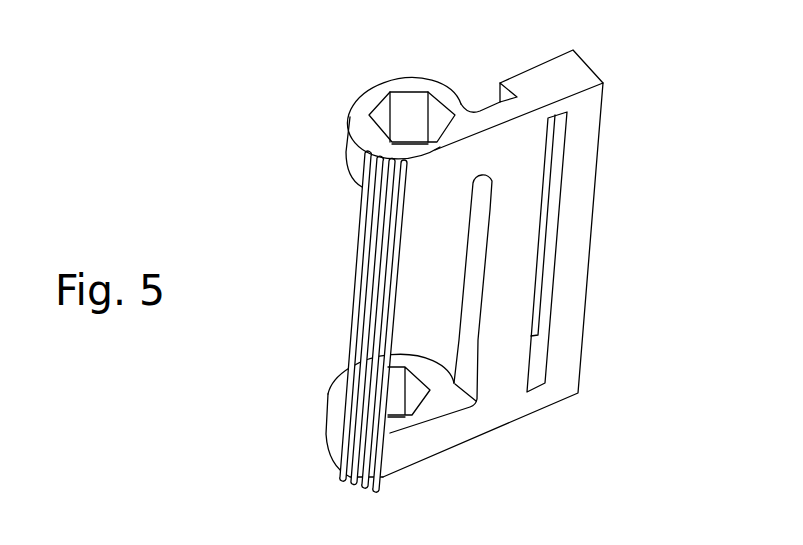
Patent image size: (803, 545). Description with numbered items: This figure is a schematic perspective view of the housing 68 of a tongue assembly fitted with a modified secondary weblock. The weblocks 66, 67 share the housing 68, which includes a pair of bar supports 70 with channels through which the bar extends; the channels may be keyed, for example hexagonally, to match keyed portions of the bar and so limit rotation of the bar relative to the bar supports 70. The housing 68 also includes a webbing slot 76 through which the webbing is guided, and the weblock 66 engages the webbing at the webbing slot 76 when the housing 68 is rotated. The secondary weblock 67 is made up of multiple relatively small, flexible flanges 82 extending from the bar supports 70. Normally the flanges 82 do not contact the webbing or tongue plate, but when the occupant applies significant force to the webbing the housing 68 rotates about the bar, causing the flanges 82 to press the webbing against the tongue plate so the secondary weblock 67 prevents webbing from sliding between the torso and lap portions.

The weblock 66 is at (535, 238).
The secondary weblock 67 is at (437, 246).
The housing 68 is at (535, 66).
The bar supports 70 is at (408, 76).
The webbing slot 76 is at (549, 308).
The flexible flanges 82 is at (361, 212).